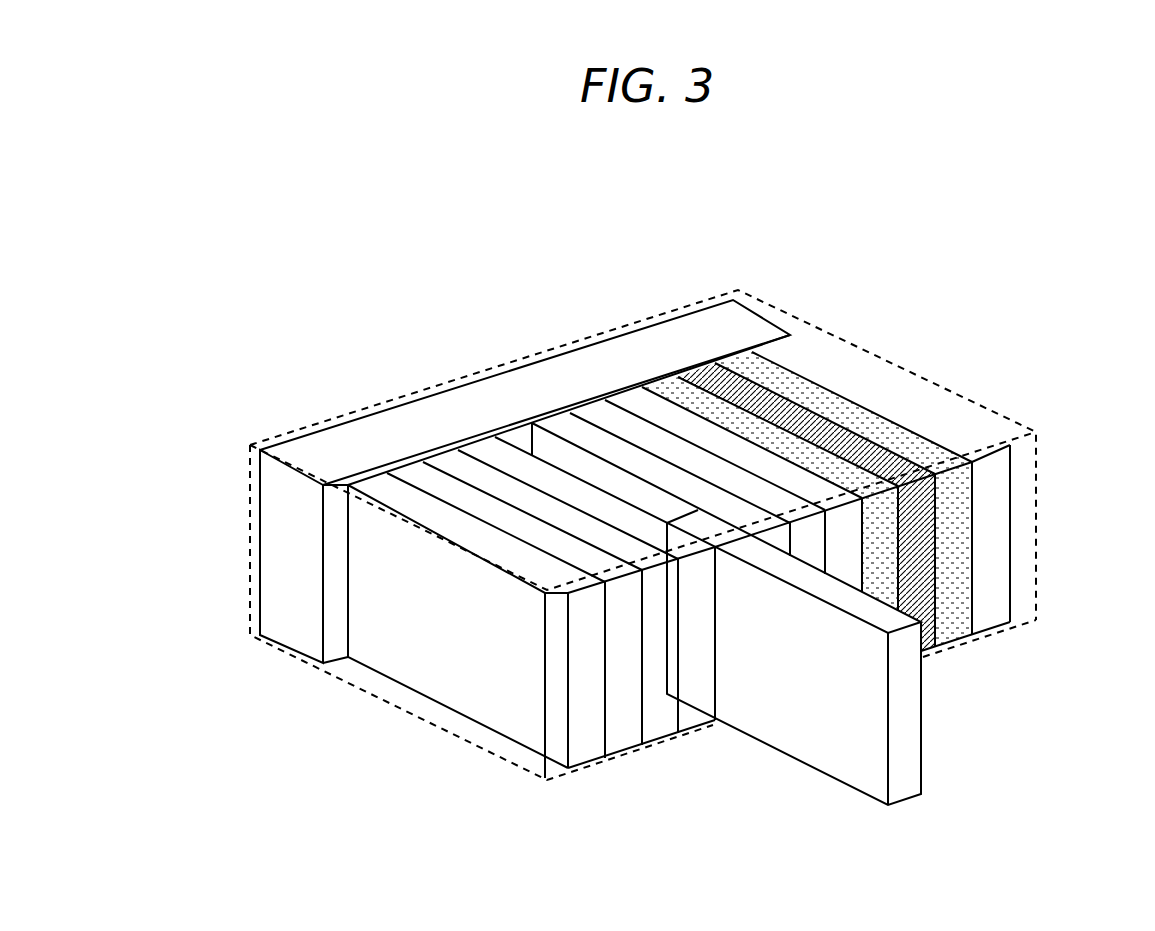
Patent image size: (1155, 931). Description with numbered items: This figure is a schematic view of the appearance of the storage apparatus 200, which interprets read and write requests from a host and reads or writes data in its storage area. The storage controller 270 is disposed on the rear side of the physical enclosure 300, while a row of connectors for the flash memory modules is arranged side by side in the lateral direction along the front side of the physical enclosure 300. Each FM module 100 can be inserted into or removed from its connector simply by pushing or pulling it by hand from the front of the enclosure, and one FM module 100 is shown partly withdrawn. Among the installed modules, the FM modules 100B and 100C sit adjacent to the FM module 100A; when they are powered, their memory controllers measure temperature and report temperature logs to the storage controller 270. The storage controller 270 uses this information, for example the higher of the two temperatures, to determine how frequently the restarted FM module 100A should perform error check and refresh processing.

The storage apparatus 200 is at (316, 297).
The storage controller 270 is at (286, 530).
The physical enclosure 300 is at (1036, 482).
The FM module 100 is at (923, 748).
The FM module 100A is at (693, 370).
The FM module 100B is at (677, 368).
The FM module 100C is at (740, 363).